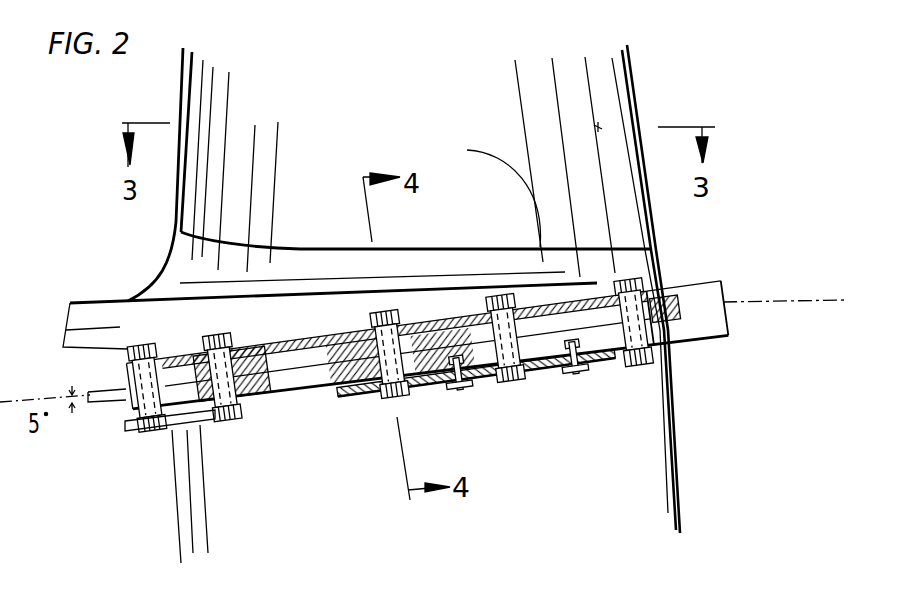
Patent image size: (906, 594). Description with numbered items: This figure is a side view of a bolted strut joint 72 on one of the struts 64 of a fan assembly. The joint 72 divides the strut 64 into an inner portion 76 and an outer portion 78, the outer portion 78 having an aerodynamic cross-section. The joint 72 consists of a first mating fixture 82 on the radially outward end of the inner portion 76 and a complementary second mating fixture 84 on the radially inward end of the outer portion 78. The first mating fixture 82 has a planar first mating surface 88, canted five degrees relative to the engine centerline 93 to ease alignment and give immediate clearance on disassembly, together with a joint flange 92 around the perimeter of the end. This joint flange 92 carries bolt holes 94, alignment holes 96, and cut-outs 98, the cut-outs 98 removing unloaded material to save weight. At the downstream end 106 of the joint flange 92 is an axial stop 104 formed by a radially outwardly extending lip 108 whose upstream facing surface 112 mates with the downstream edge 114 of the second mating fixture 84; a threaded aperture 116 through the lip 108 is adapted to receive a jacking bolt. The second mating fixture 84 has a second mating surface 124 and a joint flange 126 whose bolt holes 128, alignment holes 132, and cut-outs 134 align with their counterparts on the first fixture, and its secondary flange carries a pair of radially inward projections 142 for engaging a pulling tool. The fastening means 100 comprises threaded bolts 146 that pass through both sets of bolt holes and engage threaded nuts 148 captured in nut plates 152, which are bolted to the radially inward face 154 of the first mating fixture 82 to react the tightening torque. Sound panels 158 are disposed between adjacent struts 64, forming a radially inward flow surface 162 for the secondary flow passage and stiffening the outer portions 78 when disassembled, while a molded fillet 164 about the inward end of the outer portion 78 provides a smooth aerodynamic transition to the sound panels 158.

The strut 64 is at (650, 218).
The joint 72 is at (113, 413).
The inner portion 76 is at (580, 520).
The outer portion 78 is at (462, 108).
The first mating fixture 82 is at (255, 403).
The second mating fixture 84 is at (425, 332).
The first mating surface 88 is at (417, 325).
The joint flange 92 is at (573, 374).
The longitudinal axis 93 is at (790, 303).
The bolt holes 94 is at (542, 385).
The alignment holes 96 is at (323, 375).
The cut-outs 98 is at (469, 379).
The fastening means 100 is at (486, 389).
The axial stop 104 is at (694, 285).
The downstream end 106 is at (727, 328).
The lip 108 is at (693, 280).
The upstream facing surface 112 is at (683, 350).
The downstream edge 114 is at (693, 342).
The threaded aperture 116 is at (685, 302).
The second mating surface 124 is at (478, 393).
The joint flange 126 is at (445, 330).
The bolt holes 128 is at (510, 293).
The alignment holes 132 is at (225, 355).
The cut-outs 134 is at (266, 356).
The radially inward projections 142 is at (680, 385).
The threaded bolts 146 is at (405, 312).
The threaded nuts 148 is at (228, 438).
The nut plates 152 is at (250, 417).
The radially inward face 154 is at (602, 370).
The sound panels 158 is at (93, 337).
The radially inward flow surface 162 is at (88, 303).
The molded fillet 164 is at (153, 280).